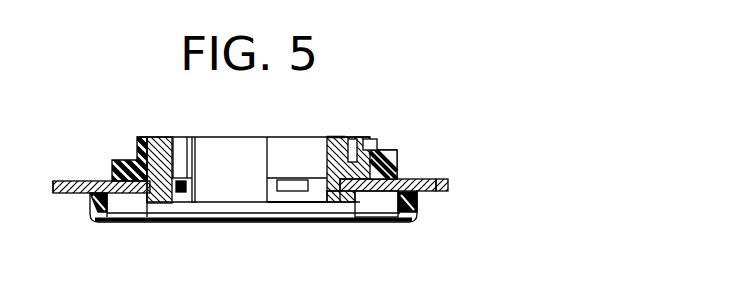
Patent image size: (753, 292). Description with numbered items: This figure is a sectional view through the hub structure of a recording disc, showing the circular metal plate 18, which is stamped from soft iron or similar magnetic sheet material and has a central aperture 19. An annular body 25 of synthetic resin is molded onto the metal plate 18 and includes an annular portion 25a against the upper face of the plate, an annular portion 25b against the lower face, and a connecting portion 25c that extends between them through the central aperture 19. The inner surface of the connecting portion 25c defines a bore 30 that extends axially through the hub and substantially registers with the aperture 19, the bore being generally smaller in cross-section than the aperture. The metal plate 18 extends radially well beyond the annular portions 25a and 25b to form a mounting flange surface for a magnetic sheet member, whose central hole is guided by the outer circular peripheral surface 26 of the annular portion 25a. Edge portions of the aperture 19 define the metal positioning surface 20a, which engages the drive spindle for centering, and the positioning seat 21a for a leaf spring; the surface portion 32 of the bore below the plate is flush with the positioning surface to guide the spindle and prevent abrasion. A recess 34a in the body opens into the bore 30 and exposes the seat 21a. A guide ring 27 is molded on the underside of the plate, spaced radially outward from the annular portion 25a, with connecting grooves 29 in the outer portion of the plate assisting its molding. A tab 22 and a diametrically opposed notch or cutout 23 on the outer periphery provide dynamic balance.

The metal plate 18 is at (70, 181).
The central aperture 19 is at (340, 203).
The metal positioning surface 20a is at (284, 203).
The positioning seat 21a is at (178, 203).
The tab 22 is at (158, 137).
The notch or cutout 23 is at (450, 185).
The annular body 25 is at (366, 150).
The annular portion 25a is at (372, 118).
The annular portion 25b is at (358, 203).
The connecting portion 25c is at (325, 203).
The outer circular peripheral surface 26 is at (392, 162).
The guide ring 27 is at (93, 221).
The connecting grooves 29 is at (100, 181).
The bore 30 is at (233, 184).
The surface portion 32 is at (318, 201).
The recess or slit 34a is at (180, 137).